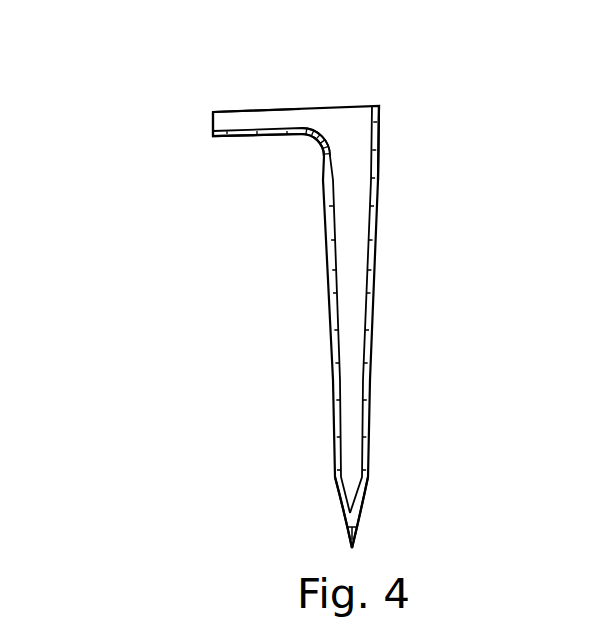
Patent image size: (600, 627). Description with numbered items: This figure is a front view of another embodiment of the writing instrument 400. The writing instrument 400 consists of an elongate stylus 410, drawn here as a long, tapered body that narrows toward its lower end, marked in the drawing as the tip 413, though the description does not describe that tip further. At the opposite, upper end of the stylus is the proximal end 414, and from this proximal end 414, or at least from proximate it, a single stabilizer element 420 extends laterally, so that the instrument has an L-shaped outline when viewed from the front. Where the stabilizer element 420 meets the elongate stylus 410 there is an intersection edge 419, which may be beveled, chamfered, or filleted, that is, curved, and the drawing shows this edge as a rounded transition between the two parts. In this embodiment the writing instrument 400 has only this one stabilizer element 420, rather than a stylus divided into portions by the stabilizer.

The writing instrument 400 is at (114, 53).
The elongate stylus 410 is at (350, 258).
The pointed tip 413 is at (357, 532).
The proximal end 414 is at (358, 106).
The intersection edge 419 is at (317, 148).
The single stabilizer element 420 is at (243, 117).